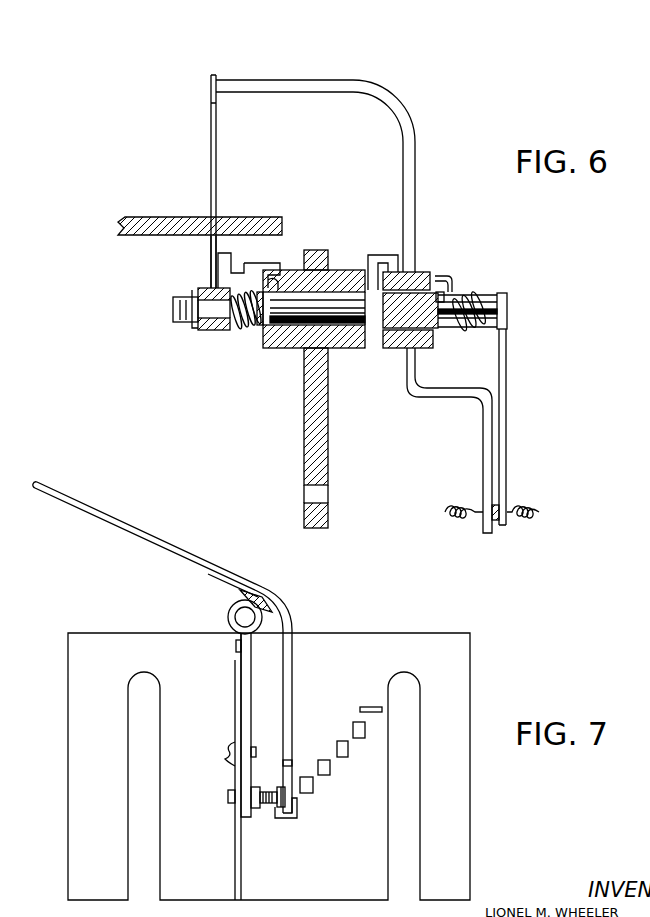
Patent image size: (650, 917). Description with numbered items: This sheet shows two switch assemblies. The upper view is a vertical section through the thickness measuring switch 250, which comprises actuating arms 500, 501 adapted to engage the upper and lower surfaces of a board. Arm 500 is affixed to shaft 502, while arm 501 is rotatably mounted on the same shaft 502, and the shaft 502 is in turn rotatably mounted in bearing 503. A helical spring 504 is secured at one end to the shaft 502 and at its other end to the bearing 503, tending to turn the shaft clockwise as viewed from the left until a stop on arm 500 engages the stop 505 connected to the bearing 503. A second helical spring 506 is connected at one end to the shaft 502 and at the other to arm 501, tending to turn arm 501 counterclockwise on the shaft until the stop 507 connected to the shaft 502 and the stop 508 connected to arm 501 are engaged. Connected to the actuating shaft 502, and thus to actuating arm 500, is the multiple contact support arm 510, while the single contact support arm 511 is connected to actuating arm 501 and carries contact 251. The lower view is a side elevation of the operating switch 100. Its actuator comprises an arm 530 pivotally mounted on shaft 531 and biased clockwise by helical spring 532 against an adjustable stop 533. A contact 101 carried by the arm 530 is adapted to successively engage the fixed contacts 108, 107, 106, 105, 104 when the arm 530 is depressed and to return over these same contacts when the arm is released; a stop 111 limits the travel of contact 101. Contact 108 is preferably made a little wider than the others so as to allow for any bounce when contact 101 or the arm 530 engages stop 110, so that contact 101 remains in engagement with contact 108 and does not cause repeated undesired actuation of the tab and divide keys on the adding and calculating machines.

In FIG. 6, the actuating arm 501 is at (210, 151).
In FIG. 6, the actuating arm 500 is at (211, 253).
In FIG. 6, the shaft 502 is at (175, 315).
In FIG. 6, the bearing 503 is at (292, 350).
In FIG. 6, the helical spring 504 is at (225, 253).
In FIG. 6, the stop 505 is at (263, 262).
In FIG. 6, the helical spring 506 is at (467, 291).
In FIG. 6, the stop 507 is at (374, 256).
In FIG. 6, the stop 508 is at (393, 257).
In FIG. 6, the thickness measuring switch 250 is at (328, 421).
In FIG. 6, the multiple contact support arm 510 is at (483, 466).
In FIG. 6, the single contact support arm 511 is at (503, 475).
In FIG. 6, the contact 251 is at (497, 520).
In FIG. 7, the operating switch 100 is at (117, 638).
In FIG. 7, the arm 530 is at (168, 544).
In FIG. 7, the helical spring 532 is at (222, 586).
In FIG. 7, the shaft 531 is at (238, 617).
In FIG. 7, the contact 101 is at (293, 775).
In FIG. 7, the adjustable stop 533 is at (282, 784).
In FIG. 7, the stop 110 is at (272, 807).
In FIG. 7, the contact 108 is at (297, 810).
In FIG. 7, the contact 107 is at (310, 791).
In FIG. 7, the contact 106 is at (329, 773).
In FIG. 7, the contact 105 is at (344, 756).
In FIG. 7, the contact 104 is at (359, 721).
In FIG. 7, the stop 111 is at (377, 707).